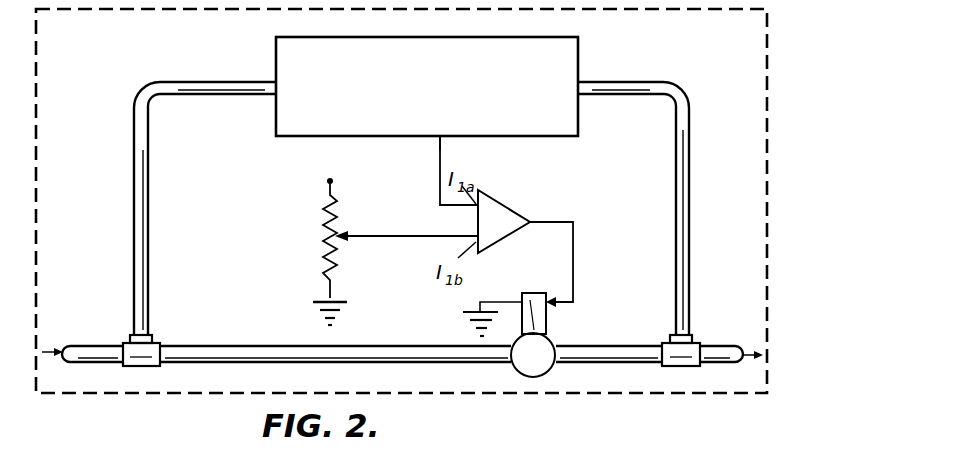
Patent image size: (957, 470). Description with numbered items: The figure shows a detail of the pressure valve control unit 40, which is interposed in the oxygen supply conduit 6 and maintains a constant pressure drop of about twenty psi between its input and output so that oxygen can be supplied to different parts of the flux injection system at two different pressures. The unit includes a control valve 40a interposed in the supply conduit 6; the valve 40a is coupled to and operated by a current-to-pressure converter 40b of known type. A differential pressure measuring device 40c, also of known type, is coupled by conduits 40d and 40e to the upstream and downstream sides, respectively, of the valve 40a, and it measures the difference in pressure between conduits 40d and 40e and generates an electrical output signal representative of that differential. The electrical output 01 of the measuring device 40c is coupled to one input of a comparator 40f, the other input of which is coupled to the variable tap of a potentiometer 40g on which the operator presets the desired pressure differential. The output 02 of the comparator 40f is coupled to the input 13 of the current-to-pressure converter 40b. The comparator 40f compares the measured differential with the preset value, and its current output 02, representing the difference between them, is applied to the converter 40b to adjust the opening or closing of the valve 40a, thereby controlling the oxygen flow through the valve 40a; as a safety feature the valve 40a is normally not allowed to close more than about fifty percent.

The pressure valve control unit 40 is at (795, 110).
The control valve 40a is at (551, 368).
The current-to-pressure converter 40b is at (548, 321).
The differential pressure measuring device 40c is at (580, 58).
The conduit 40d is at (233, 97).
The conduit 40e is at (645, 97).
The comparator 40f is at (510, 206).
The potentiometer 40g is at (322, 226).
The oxygen supply conduit 6 is at (400, 363).
The input of current-to-pressure converter 13 is at (550, 301).
The electrical output of measuring device 01 is at (441, 140).
The output of comparator 02 is at (549, 208).